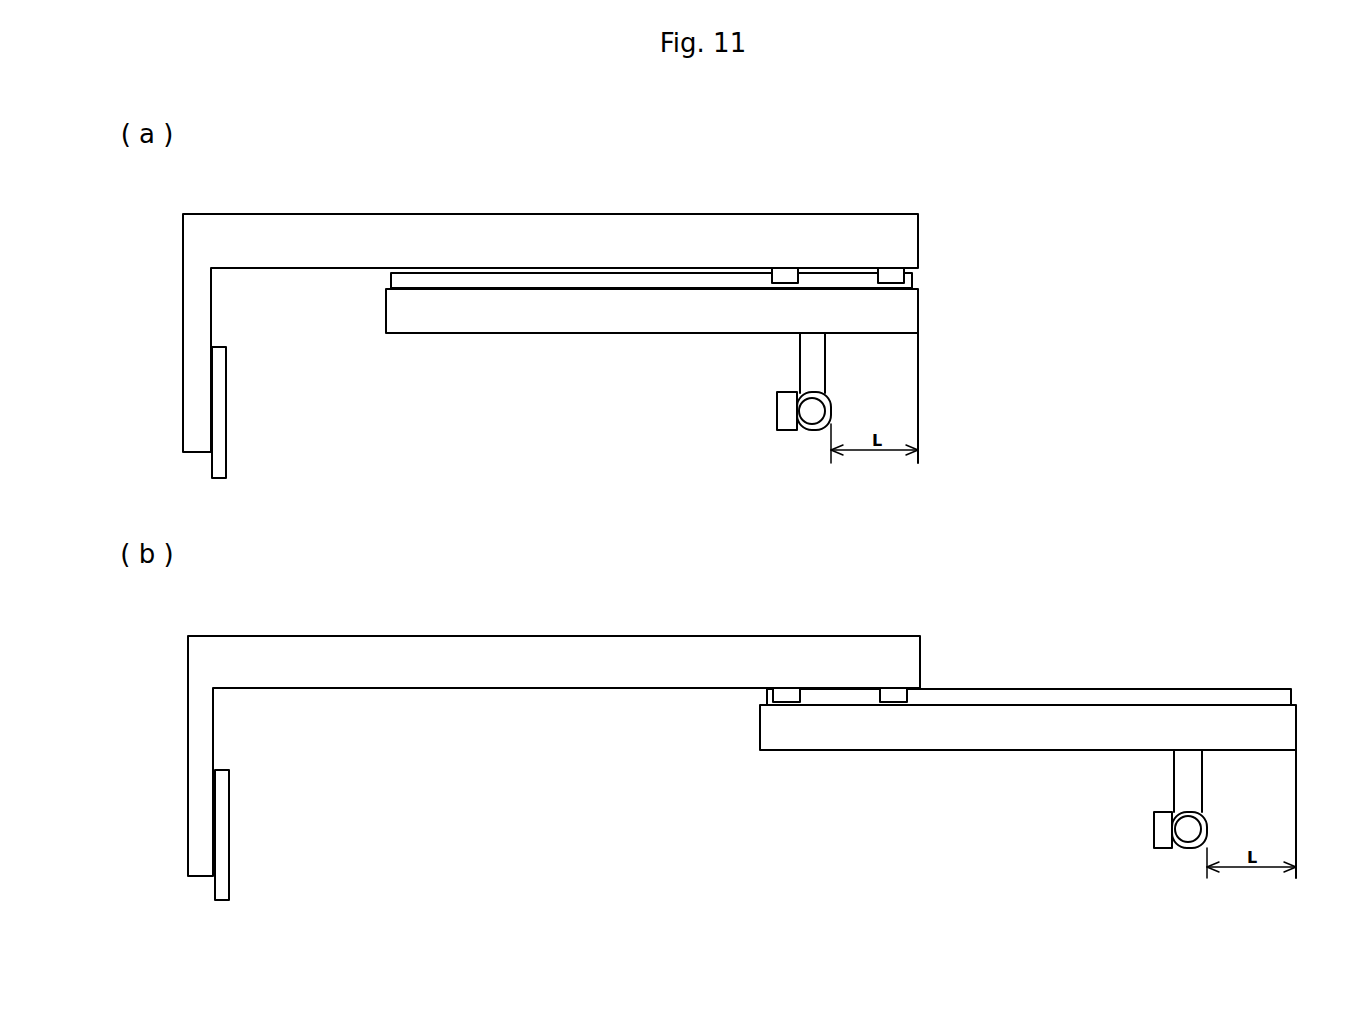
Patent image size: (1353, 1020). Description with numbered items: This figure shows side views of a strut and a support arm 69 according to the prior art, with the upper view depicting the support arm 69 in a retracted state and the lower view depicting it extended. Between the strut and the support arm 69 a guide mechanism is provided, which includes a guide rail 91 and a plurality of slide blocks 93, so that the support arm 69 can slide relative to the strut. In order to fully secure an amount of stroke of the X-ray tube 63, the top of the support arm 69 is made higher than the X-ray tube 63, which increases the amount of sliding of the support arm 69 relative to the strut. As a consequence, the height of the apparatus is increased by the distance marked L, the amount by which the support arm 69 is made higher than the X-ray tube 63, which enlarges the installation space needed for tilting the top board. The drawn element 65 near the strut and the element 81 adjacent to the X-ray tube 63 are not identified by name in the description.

The X-ray tube 63 is at (231, 214).
The end plate 65 is at (226, 370).
The support arm 69 is at (918, 310).
The stopper block 81 is at (777, 395).
The guide rail 91 is at (388, 275).
The slide blocks 93 is at (768, 278).